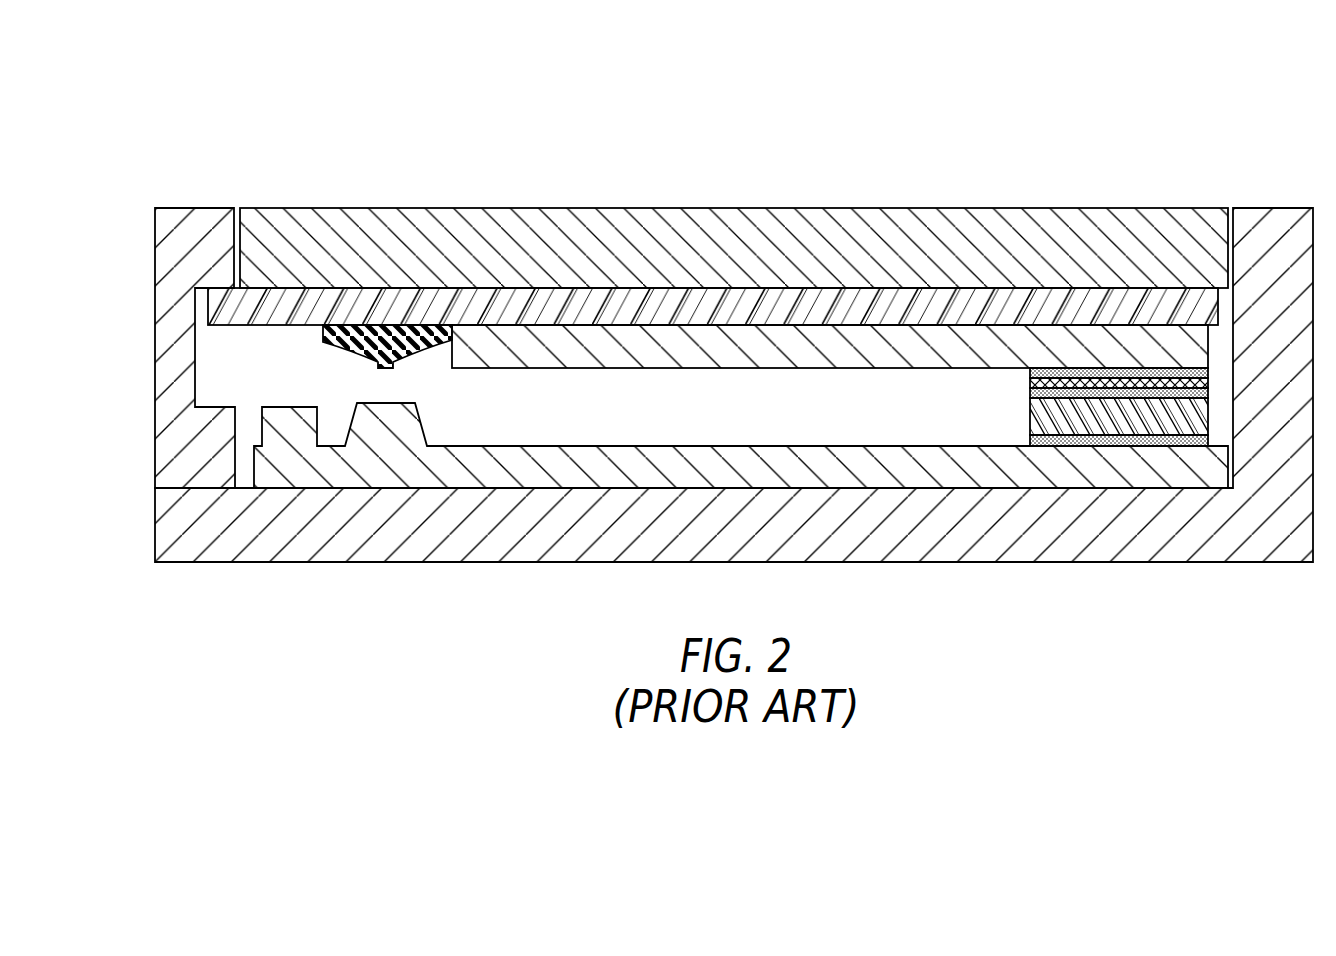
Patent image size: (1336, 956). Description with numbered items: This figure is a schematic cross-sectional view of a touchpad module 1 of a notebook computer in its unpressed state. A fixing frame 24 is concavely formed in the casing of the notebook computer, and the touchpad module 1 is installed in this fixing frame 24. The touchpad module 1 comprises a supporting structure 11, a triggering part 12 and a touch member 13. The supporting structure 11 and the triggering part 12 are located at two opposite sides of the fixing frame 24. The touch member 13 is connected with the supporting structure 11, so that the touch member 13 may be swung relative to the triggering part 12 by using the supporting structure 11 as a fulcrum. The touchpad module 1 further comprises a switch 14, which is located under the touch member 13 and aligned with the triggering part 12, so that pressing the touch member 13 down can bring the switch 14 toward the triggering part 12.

The touchpad module 1 is at (1202, 115).
The supporting structure 11 is at (1117, 417).
The triggering part 12 is at (403, 425).
The touch member 13 is at (1050, 302).
The switch 14 is at (378, 328).
The fixing frame 24 is at (193, 224).